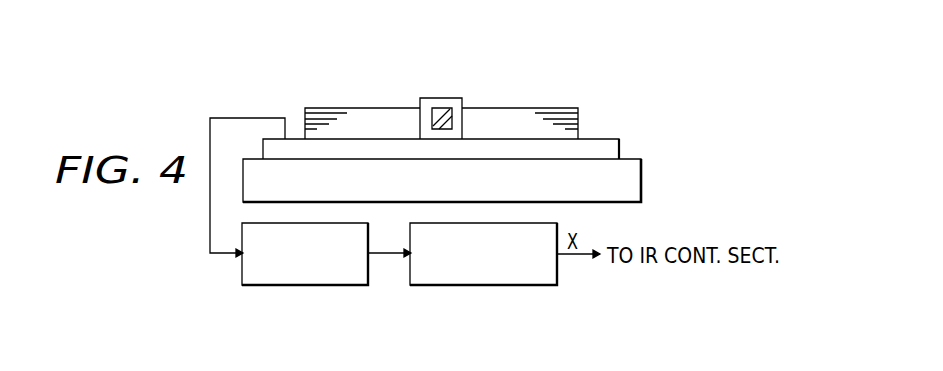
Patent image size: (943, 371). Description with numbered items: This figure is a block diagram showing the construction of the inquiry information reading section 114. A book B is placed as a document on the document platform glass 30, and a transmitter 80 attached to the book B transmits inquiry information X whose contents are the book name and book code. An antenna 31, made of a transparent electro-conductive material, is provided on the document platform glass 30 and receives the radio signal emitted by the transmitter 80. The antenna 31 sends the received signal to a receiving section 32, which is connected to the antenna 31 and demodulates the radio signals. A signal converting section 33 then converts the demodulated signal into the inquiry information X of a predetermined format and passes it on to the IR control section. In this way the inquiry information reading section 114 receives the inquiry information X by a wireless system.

The inquiry information reading section 114 is at (757, 98).
The document platform glass 30 is at (642, 178).
The antenna 31 is at (620, 149).
The transmitter 80 is at (440, 108).
The book B is at (520, 107).
The receiving section 32 is at (307, 285).
The signal converting section 33 is at (483, 285).